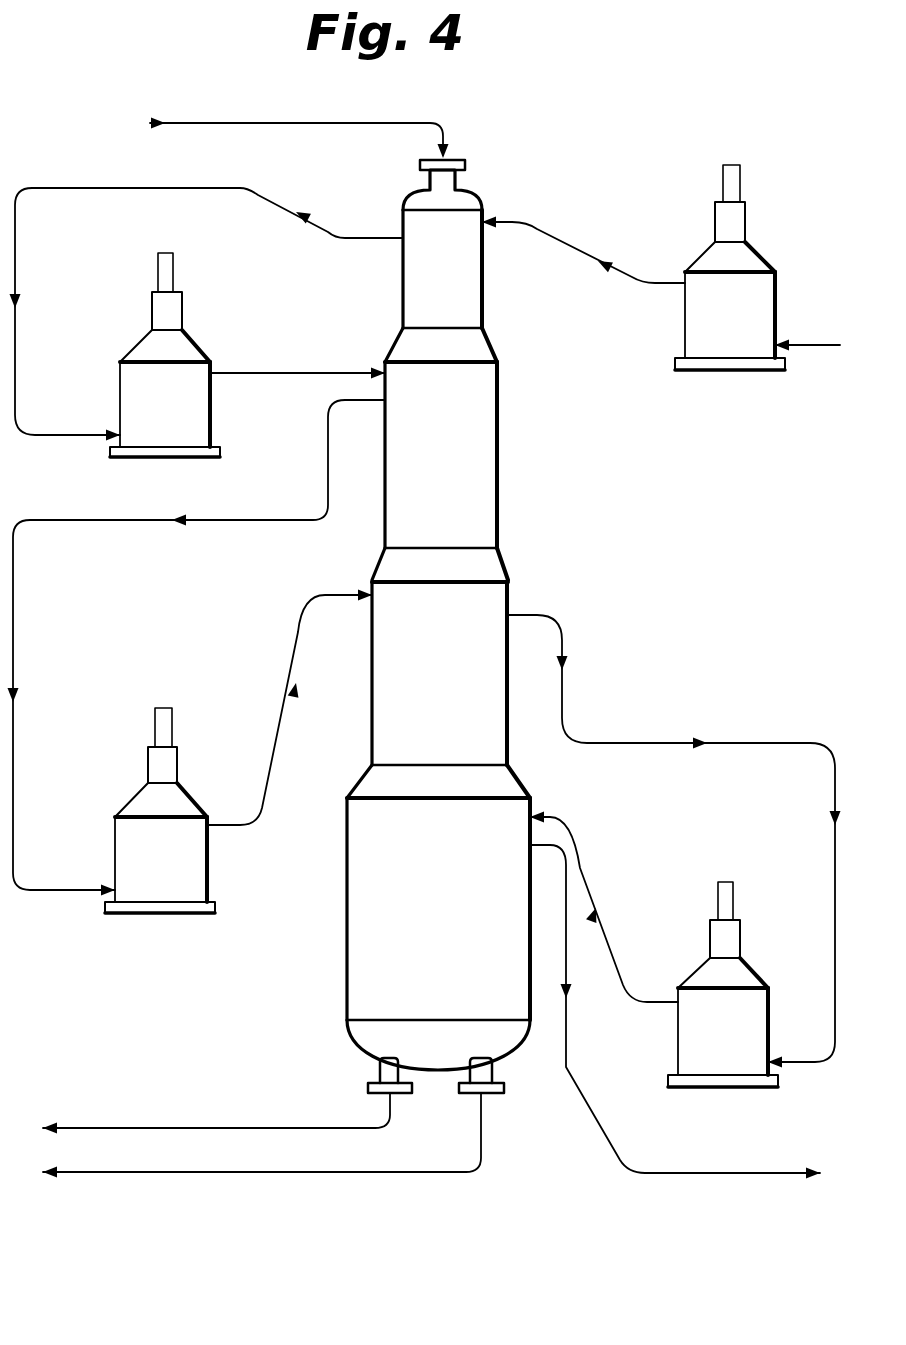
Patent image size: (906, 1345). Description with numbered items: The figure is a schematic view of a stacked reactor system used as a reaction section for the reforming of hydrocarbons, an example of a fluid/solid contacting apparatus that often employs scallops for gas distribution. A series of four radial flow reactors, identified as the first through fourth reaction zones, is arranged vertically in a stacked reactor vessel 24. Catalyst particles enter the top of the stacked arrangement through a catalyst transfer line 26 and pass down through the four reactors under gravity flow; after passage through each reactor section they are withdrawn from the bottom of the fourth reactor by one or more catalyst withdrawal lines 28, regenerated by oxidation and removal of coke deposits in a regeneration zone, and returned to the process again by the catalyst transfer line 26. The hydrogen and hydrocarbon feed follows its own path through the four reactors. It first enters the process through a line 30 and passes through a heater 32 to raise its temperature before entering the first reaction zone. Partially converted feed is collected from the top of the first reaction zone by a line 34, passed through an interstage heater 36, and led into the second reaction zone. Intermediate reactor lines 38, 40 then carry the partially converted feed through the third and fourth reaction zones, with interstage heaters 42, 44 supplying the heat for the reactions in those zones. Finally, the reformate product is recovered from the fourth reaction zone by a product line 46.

The stacked reactor vessel 24 is at (526, 472).
The catalyst transfer line 26 is at (292, 122).
The catalyst withdrawal lines 28 is at (125, 1128).
The line 30 is at (826, 348).
The heater 32 is at (758, 252).
The line 34 is at (280, 200).
The interstage heater 36 is at (197, 340).
The intermediate reactor line 38 is at (105, 521).
The intermediate reactor line 40 is at (622, 745).
The interstage heater 42 is at (148, 915).
The interstage heater 44 is at (718, 1089).
The product line 46 is at (662, 1175).